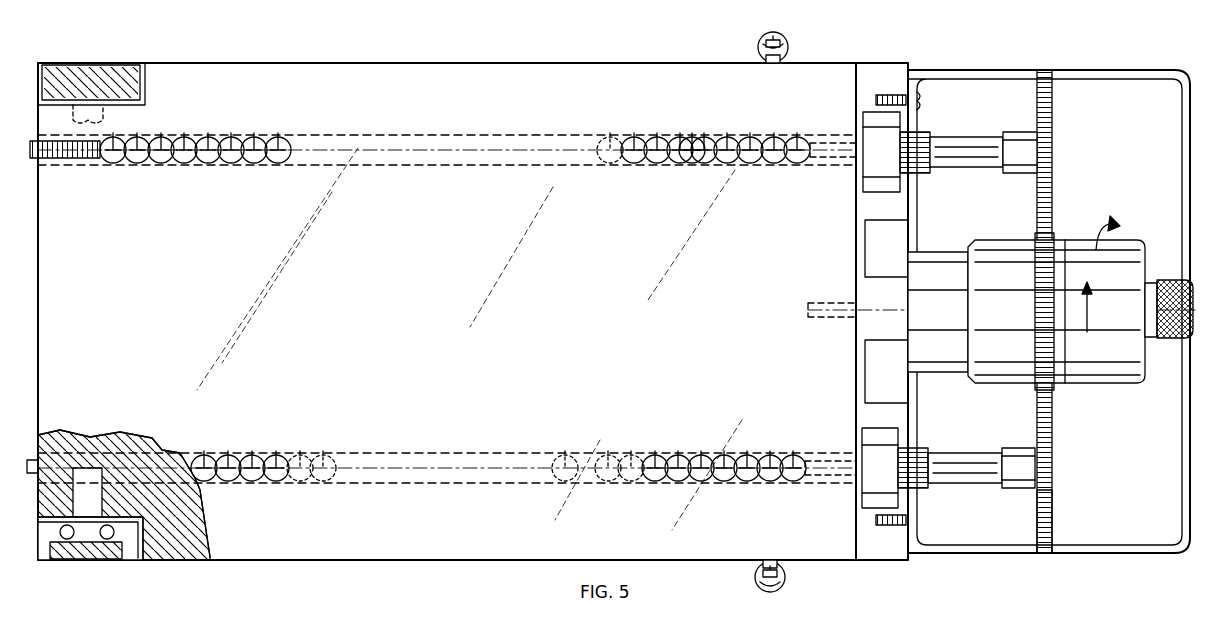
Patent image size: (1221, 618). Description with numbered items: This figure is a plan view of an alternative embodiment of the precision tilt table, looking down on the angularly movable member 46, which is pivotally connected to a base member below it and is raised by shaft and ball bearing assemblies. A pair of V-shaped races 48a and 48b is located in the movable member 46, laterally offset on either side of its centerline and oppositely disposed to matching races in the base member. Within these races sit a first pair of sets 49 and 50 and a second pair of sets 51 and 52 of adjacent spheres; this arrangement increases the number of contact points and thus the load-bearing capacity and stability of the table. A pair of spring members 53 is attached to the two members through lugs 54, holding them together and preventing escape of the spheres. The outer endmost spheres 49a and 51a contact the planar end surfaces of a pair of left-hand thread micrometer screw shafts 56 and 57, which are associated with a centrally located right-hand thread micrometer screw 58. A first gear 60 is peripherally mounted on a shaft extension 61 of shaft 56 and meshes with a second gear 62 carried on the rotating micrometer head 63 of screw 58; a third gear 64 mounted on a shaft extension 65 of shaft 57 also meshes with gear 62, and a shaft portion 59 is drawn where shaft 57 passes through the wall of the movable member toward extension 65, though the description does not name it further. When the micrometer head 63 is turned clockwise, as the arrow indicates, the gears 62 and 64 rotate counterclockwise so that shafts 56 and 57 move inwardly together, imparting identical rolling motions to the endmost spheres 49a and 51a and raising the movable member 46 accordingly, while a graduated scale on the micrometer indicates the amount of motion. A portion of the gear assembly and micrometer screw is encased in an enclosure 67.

The angularly movable member 46 is at (540, 323).
The V-shaped race 48a is at (540, 453).
The V-shaped race 48b is at (556, 168).
The set of adjacent spheres 49 is at (676, 474).
The outer endmost sphere 49a is at (790, 457).
The set of adjacent spheres 50 is at (682, 457).
The set of adjacent spheres 51 is at (705, 165).
The outer endmost sphere 51a is at (797, 165).
The set of adjacent spheres 52 is at (688, 146).
The spring member 53 is at (790, 48).
The lug 54 is at (780, 41).
The left-hand thread micrometer screw shaft 56 is at (838, 455).
The left-hand thread micrometer screw shaft 57 is at (824, 142).
The right-hand thread micrometer screw 58 is at (930, 456).
The upper splined shaft section 59 is at (930, 137).
The first gear 60 is at (1045, 553).
The shaft extension 61 is at (958, 486).
The second gear 62 is at (1054, 240).
The micrometer head 63 is at (1088, 378).
The third gear 64 is at (1045, 72).
The shaft extension 65 is at (980, 137).
The enclosure 67 is at (1172, 70).